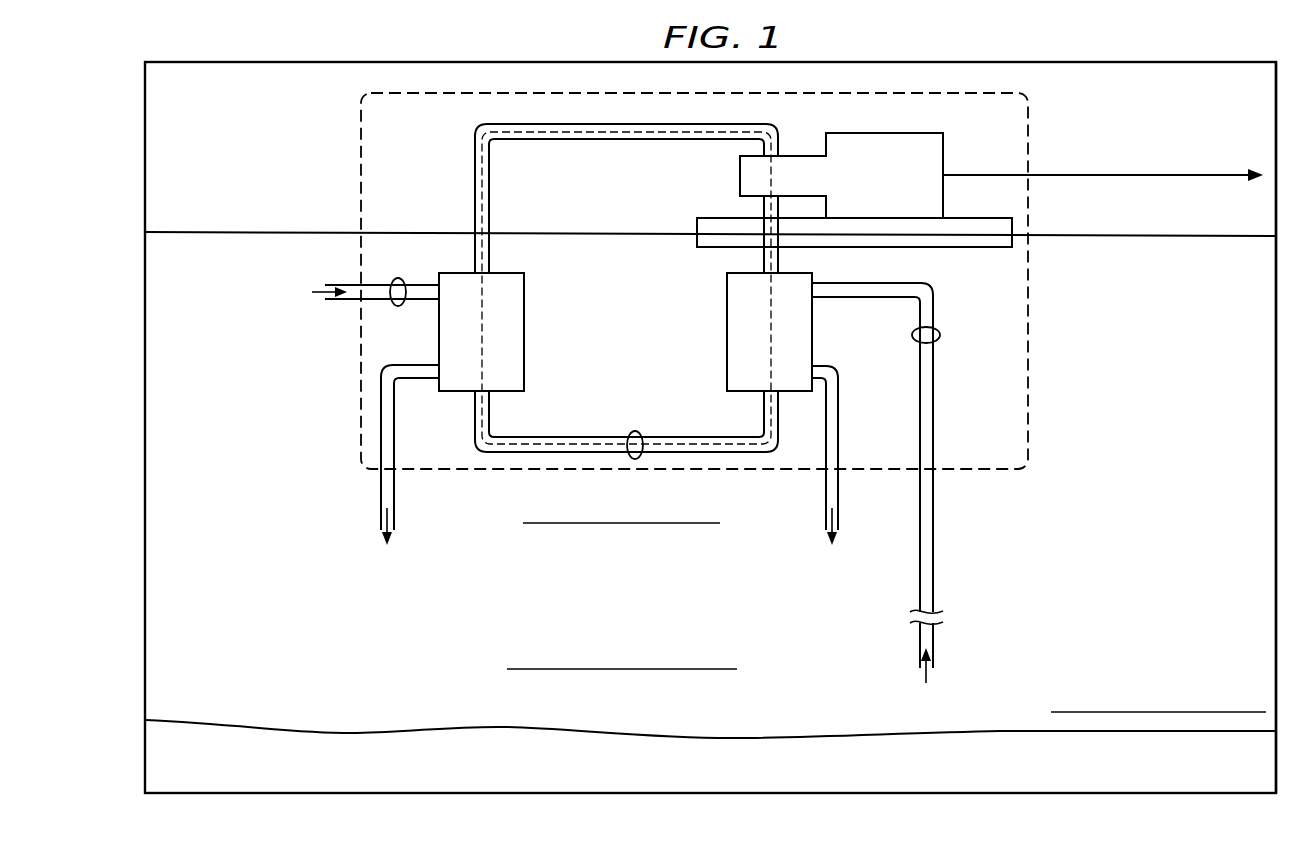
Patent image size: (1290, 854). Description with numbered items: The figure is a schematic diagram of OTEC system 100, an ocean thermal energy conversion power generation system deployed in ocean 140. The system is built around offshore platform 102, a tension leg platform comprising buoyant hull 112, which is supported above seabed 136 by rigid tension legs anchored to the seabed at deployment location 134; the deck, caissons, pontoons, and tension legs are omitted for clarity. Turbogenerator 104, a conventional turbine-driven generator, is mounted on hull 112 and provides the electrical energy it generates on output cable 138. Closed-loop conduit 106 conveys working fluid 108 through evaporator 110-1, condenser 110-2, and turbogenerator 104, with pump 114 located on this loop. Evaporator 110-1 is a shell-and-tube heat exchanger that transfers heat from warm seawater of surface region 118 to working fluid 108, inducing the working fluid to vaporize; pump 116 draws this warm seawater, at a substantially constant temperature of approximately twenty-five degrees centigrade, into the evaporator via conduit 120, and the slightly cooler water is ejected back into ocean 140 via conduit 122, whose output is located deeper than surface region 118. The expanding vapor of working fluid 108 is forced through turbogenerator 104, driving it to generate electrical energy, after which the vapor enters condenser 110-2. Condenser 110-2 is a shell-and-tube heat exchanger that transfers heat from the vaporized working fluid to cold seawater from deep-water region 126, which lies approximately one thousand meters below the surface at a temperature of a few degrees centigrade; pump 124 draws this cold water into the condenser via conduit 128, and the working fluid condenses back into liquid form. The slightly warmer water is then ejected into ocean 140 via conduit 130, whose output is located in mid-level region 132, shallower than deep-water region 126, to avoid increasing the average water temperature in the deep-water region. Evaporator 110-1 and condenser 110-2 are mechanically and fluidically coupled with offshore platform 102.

The OTEC system 100 is at (335, 148).
The offshore platform 102 is at (1028, 378).
The turbogenerator 104 is at (886, 133).
The closed-loop conduit 106 is at (475, 182).
The working fluid 108 is at (490, 168).
The evaporator 110-1 is at (524, 303).
The condenser 110-2 is at (727, 305).
The hull 112 is at (958, 247).
The pump 114 is at (636, 430).
The pump 116 is at (398, 307).
The surface region 118 is at (1247, 267).
The conduit 120 is at (346, 284).
The conduit 122 is at (381, 489).
The pump 124 is at (941, 336).
The deep-water region 126 is at (1158, 701).
The conduit 128 is at (935, 636).
The conduit 130 is at (826, 490).
The mid-level region 132 is at (621, 512).
The deployment location 134 is at (622, 658).
The seabed 136 is at (1263, 776).
The output cable 138 is at (1216, 177).
The ocean 140 is at (1260, 500).